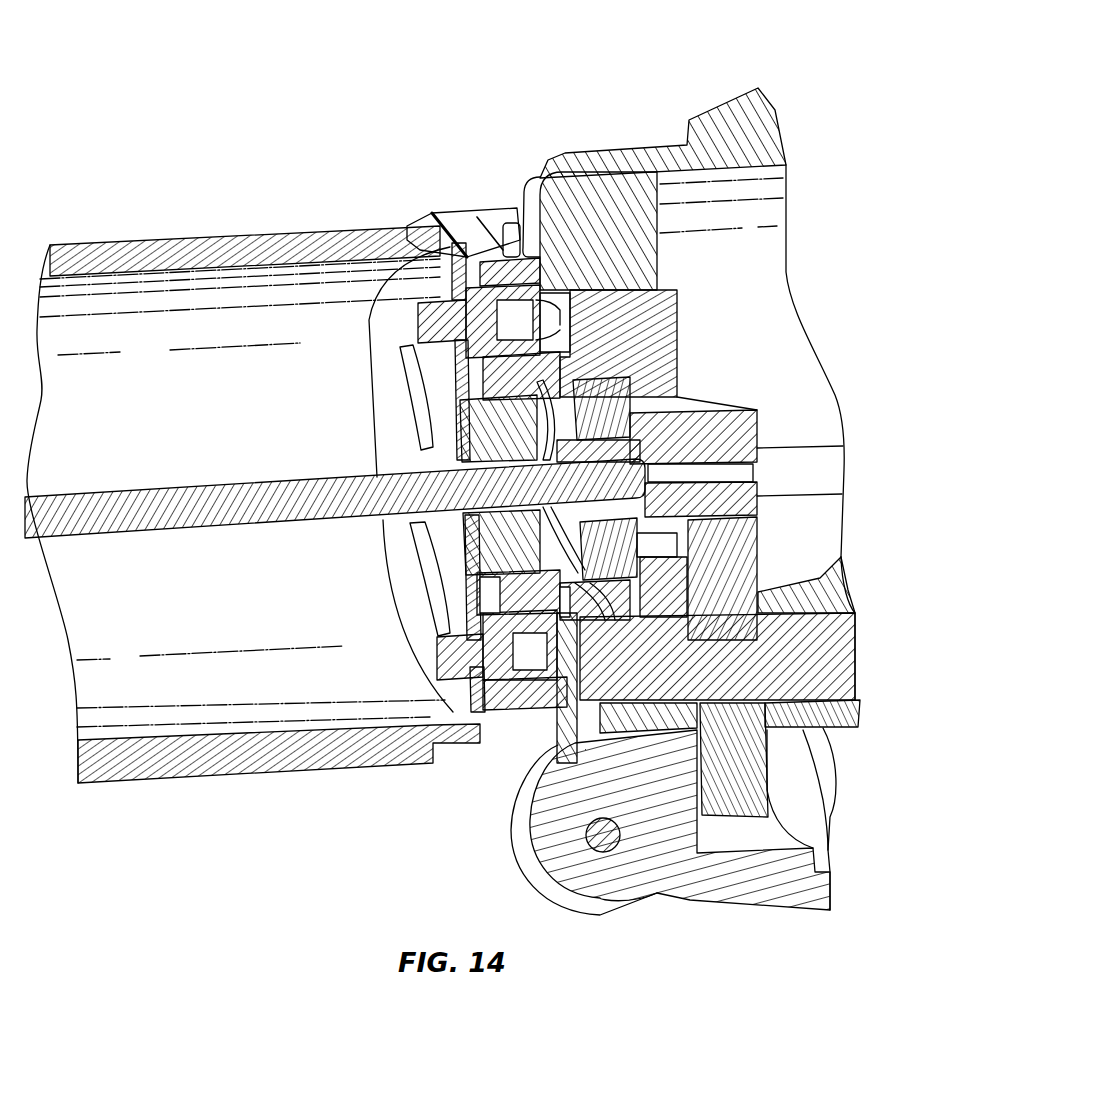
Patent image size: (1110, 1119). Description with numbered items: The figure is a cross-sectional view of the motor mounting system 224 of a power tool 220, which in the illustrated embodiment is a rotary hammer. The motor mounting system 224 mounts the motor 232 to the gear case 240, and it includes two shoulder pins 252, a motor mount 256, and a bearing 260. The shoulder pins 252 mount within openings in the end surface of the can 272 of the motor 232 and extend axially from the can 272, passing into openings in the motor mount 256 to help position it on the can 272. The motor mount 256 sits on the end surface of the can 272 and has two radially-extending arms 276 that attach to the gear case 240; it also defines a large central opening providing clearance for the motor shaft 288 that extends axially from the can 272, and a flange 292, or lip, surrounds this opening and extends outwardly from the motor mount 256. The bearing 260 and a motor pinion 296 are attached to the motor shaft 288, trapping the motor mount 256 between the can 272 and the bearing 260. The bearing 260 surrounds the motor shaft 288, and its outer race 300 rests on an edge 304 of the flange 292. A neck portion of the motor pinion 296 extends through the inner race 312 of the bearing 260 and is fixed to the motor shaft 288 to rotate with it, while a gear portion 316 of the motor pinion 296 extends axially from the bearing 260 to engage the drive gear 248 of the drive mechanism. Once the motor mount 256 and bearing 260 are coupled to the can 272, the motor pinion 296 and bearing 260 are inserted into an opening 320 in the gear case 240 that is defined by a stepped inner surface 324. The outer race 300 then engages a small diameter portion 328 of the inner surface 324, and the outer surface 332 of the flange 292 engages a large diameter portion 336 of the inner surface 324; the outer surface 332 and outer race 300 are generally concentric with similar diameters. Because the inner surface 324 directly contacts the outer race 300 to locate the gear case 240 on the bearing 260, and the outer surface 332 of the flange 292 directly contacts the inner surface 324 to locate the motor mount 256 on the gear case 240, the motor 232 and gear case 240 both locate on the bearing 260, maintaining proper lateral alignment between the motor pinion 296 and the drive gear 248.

The power tool 220 is at (580, 58).
The motor mounting system 224 is at (410, 155).
The motor 232 is at (100, 243).
The gear case 240 is at (735, 905).
The drive gear 248 is at (710, 815).
The shoulder pins 252 is at (405, 315).
The motor mount 256 is at (462, 214).
The bearing 260 is at (640, 393).
The can 272 is at (215, 232).
The radially-extending arms 276 is at (455, 218).
The motor shaft 288 is at (175, 480).
The flange 292 is at (557, 680).
The motor pinion 296 is at (720, 420).
The outer race 300 is at (625, 392).
The edge 304 is at (560, 688).
The inner race 312 is at (470, 536).
The gear portion 316 is at (760, 448).
The opening 320 is at (676, 405).
The stepped inner surface 324 is at (690, 415).
The small diameter portion 328 is at (557, 740).
The outer surface 332 is at (552, 323).
The large diameter portion 336 is at (596, 400).